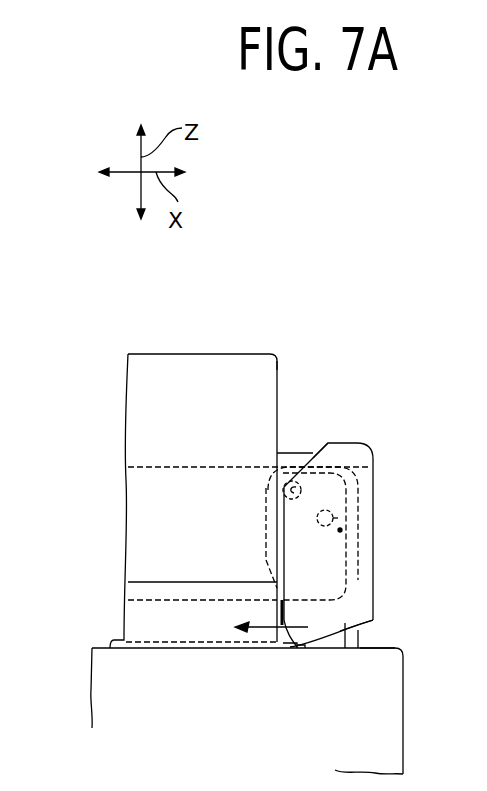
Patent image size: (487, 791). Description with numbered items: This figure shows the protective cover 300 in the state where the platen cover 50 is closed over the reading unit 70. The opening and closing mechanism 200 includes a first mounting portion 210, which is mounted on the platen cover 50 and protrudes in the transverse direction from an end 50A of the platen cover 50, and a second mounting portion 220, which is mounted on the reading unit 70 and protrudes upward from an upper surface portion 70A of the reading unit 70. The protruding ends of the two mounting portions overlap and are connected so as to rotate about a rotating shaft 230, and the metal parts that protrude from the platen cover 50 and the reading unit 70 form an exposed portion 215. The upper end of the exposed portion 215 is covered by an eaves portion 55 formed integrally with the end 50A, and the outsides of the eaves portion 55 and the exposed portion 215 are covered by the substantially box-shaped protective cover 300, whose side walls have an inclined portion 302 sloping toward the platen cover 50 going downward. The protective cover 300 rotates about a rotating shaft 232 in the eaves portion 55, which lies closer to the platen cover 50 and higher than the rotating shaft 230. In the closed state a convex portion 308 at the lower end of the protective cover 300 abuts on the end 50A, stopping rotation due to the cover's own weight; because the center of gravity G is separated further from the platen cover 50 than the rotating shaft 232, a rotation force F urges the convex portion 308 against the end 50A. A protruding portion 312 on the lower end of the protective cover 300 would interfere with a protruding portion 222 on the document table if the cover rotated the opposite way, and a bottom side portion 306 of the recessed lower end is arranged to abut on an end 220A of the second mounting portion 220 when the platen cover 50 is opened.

The platen cover 50 is at (198, 356).
The end of the platen cover 50A is at (278, 364).
The eaves portion 55 is at (302, 450).
The reading unit 70 is at (404, 707).
The upper surface portion of the reading unit 70A is at (385, 647).
The opening and closing mechanism 200 is at (384, 341).
The first mounting portion 210 is at (358, 490).
The exposed portion 215 is at (346, 575).
The second mounting portion 220 is at (338, 646).
The end of the second mounting portion 220A is at (362, 648).
The protruding portion 222 is at (303, 648).
The rotating shaft 230 is at (358, 517).
The rotating shaft 232 is at (283, 489).
The protective cover 300 is at (372, 456).
The inclined portion 302 is at (327, 442).
The bottom side portion 306 is at (371, 621).
The convex portion 308 is at (268, 644).
The protruding portion 312 is at (283, 627).
The rotation force F is at (250, 630).
The center of gravity G is at (340, 530).